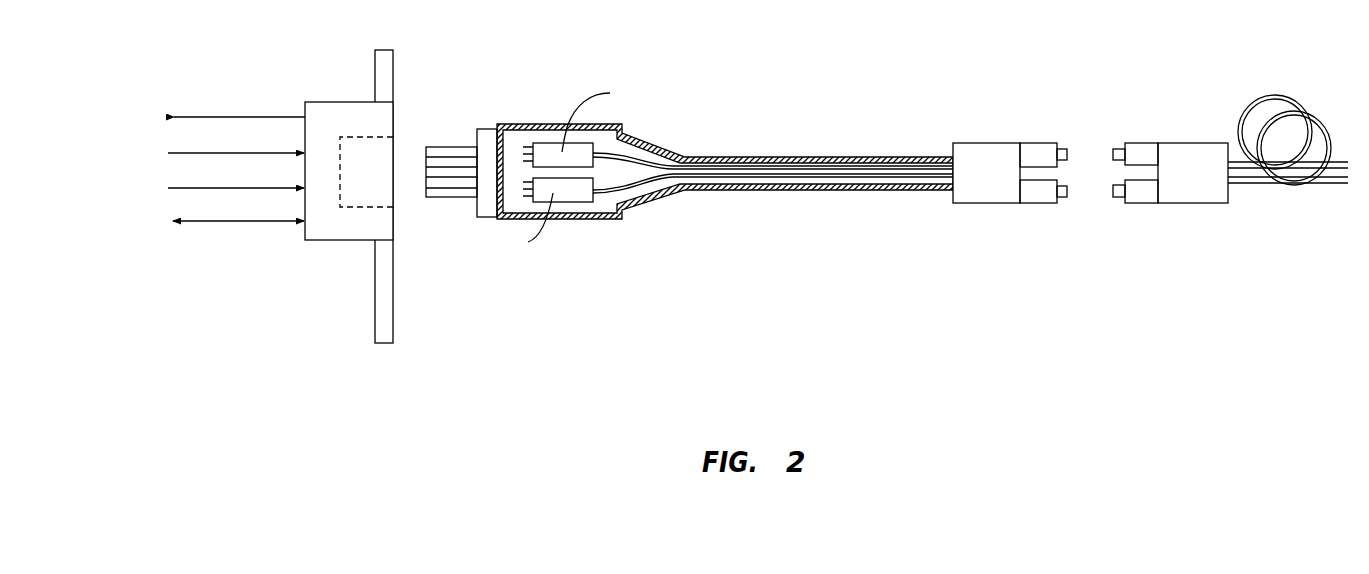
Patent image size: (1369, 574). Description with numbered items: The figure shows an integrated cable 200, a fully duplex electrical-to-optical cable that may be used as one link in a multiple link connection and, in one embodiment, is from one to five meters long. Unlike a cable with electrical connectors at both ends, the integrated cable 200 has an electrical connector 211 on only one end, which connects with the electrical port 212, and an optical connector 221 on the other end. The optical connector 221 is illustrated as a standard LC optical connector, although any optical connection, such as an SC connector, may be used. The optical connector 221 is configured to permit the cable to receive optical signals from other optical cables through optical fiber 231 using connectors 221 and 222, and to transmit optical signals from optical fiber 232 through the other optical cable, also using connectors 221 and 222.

The integrated cable 200 is at (746, 188).
The electrical connector 211 is at (505, 125).
The electrical port 212 is at (393, 200).
The optical connector 221 is at (1010, 136).
The optical connector 222 is at (1183, 147).
The optical fiber 231 is at (750, 168).
The optical fiber 232 is at (805, 177).